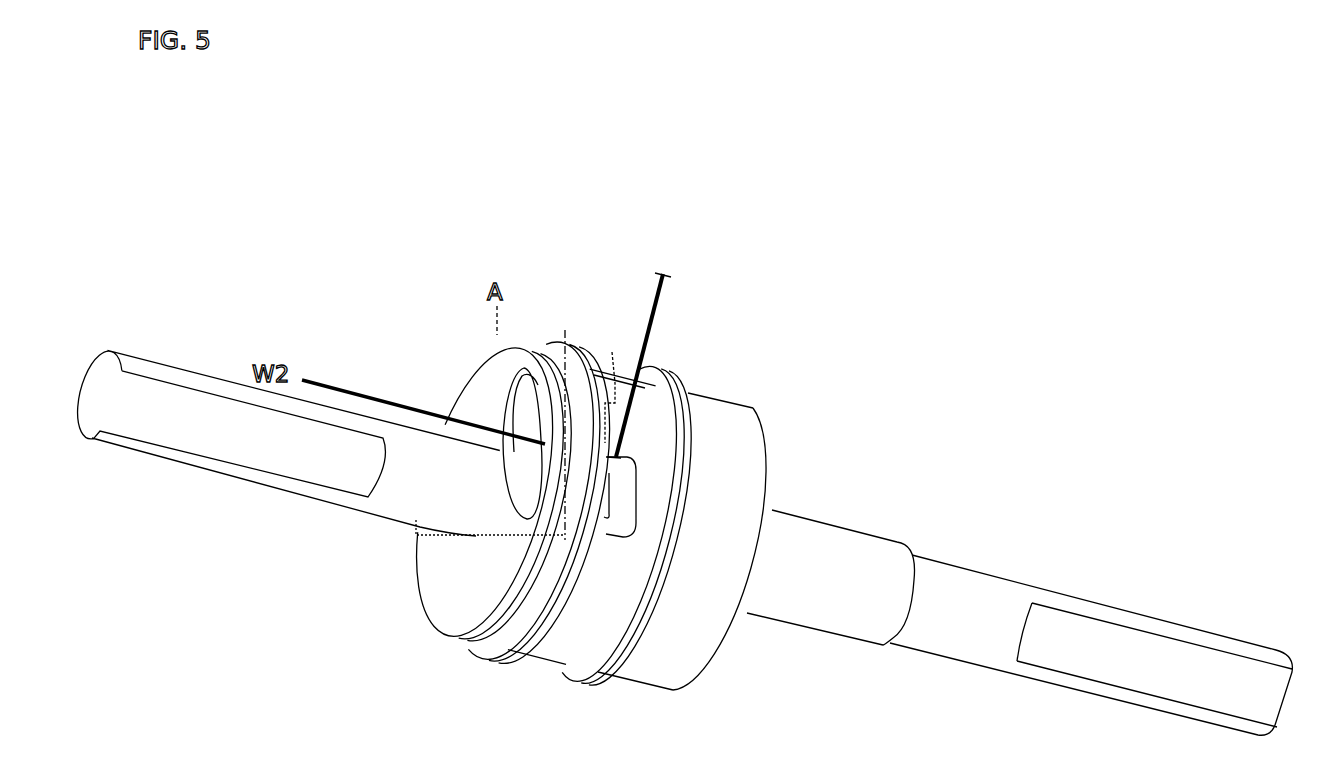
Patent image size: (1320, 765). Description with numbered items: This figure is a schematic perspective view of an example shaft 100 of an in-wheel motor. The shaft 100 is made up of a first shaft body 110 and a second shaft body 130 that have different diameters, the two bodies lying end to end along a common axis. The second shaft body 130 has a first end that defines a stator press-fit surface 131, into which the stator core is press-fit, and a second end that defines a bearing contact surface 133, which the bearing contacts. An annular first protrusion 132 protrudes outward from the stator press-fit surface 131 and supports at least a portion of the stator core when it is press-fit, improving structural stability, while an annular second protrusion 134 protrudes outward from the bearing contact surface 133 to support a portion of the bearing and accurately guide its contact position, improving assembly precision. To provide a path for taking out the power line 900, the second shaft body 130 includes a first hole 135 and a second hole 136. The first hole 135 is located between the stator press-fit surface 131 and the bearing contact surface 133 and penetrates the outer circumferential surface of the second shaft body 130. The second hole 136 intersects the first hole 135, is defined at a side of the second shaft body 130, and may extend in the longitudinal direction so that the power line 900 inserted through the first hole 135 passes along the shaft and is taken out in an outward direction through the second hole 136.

The shaft 100 is at (235, 262).
The first shaft body 110 is at (867, 550).
The second shaft body 130 is at (656, 541).
The stator press-fit surface 131 is at (723, 398).
The first protrusion 132 is at (690, 431).
The bearing contact surface 133 is at (512, 609).
The second protrusion 134 is at (487, 653).
The first hole 135 is at (612, 352).
The second hole 136 is at (526, 490).
The power line 900 is at (660, 311).